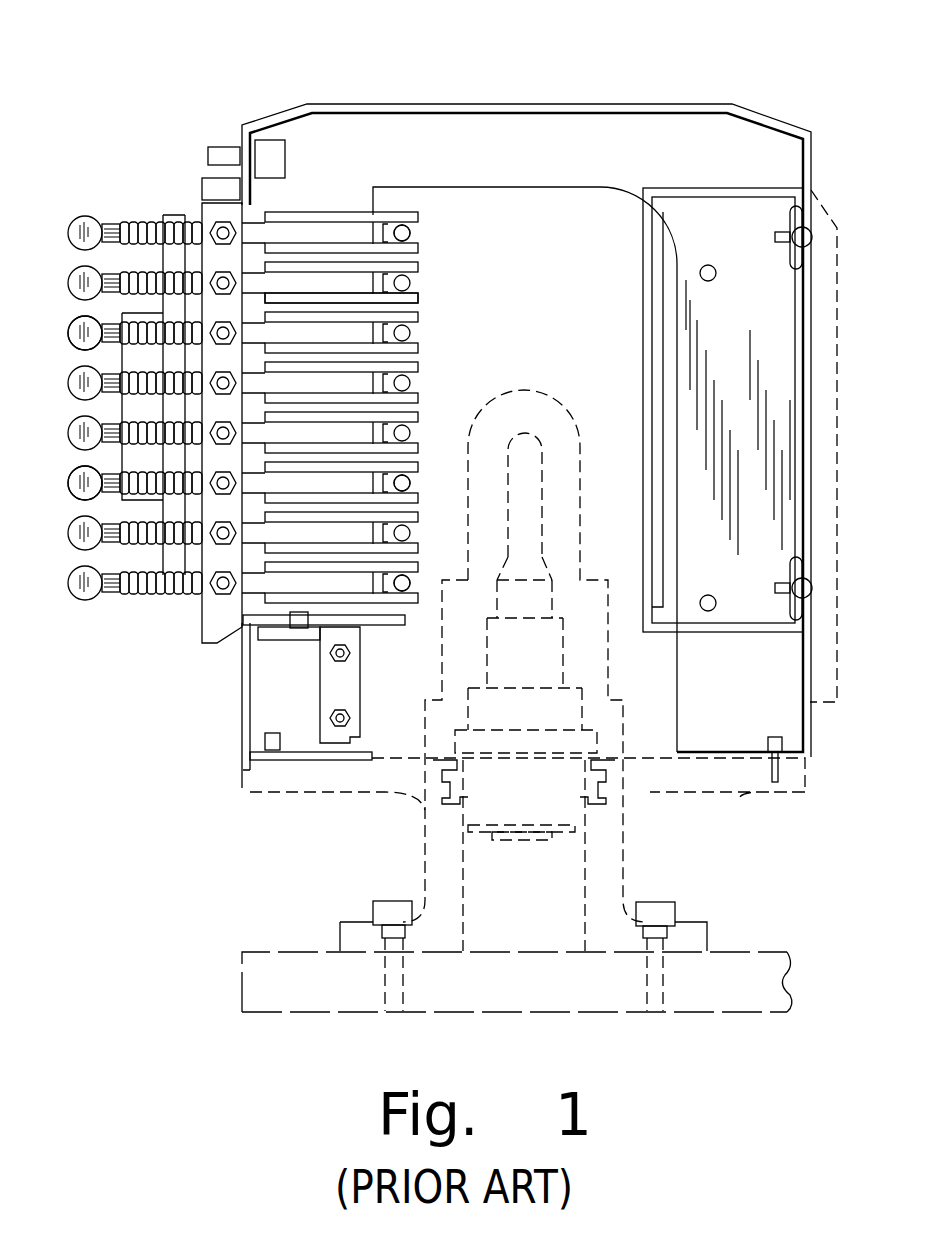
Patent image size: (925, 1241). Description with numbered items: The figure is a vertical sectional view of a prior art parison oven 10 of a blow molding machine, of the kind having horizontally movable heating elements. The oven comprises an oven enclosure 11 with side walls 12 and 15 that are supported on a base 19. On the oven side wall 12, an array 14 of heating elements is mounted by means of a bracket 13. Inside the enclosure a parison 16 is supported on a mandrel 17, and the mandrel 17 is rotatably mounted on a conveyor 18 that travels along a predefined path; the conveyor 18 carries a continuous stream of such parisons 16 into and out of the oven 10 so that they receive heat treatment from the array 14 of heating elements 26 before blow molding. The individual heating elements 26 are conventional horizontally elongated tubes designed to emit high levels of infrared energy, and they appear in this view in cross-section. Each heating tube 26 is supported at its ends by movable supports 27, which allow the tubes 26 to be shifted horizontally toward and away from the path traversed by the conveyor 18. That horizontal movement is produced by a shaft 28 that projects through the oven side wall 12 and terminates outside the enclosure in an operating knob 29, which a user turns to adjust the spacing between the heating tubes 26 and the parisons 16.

The parison oven 10 is at (270, 84).
The oven enclosure 11 is at (447, 110).
The side wall 12 is at (242, 137).
The bracket 13 is at (210, 214).
The array of heating elements 14 is at (438, 350).
The side wall 15 is at (812, 420).
The parison 16 is at (527, 520).
The mandrel 17 is at (563, 710).
The conveyor 18 is at (582, 742).
The base 19 is at (720, 780).
The heating element 26 is at (410, 233).
The movable support 27 is at (420, 298).
The shaft 28 is at (134, 218).
The operating knob 29 is at (80, 331).